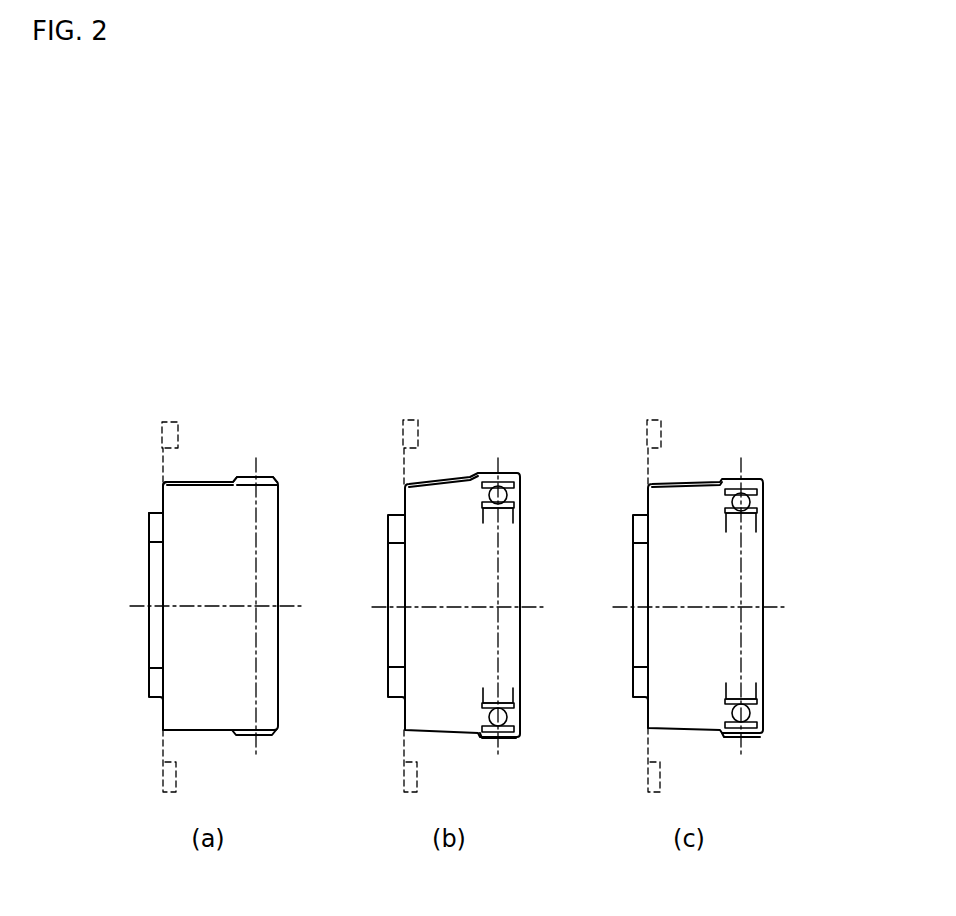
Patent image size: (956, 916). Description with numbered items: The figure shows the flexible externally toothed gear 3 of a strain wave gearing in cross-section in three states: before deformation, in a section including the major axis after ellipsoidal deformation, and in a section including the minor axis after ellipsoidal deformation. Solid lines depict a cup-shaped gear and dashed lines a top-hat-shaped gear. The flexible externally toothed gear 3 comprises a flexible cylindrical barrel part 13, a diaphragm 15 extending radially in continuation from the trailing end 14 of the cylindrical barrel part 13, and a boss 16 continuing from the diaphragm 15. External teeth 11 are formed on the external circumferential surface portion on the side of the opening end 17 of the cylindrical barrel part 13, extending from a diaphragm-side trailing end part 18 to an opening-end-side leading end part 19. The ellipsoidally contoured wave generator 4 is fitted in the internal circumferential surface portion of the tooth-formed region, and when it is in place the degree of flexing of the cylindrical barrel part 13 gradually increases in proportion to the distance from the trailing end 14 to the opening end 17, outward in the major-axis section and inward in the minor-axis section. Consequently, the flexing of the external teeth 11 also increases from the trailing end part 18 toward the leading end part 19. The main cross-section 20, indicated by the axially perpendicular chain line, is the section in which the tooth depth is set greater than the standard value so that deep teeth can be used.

The flexible externally toothed gear 3 is at (192, 404).
The wave generator 4 is at (511, 509).
The external teeth 11 is at (265, 477).
The cylindrical barrel part 13 is at (203, 486).
The trailing end 14 is at (160, 488).
The diaphragm 15 is at (160, 500).
The boss 16 is at (156, 530).
The opening end 17 is at (278, 482).
The diaphragm-side trailing end part 18 is at (242, 477).
The opening-end-side leading end part 19 is at (271, 480).
The main cross-section 20 is at (258, 548).